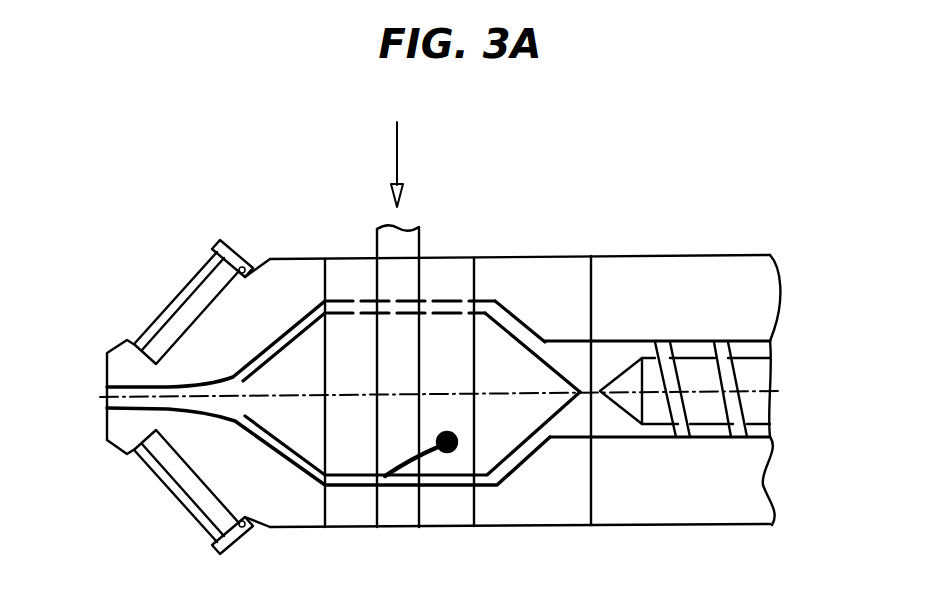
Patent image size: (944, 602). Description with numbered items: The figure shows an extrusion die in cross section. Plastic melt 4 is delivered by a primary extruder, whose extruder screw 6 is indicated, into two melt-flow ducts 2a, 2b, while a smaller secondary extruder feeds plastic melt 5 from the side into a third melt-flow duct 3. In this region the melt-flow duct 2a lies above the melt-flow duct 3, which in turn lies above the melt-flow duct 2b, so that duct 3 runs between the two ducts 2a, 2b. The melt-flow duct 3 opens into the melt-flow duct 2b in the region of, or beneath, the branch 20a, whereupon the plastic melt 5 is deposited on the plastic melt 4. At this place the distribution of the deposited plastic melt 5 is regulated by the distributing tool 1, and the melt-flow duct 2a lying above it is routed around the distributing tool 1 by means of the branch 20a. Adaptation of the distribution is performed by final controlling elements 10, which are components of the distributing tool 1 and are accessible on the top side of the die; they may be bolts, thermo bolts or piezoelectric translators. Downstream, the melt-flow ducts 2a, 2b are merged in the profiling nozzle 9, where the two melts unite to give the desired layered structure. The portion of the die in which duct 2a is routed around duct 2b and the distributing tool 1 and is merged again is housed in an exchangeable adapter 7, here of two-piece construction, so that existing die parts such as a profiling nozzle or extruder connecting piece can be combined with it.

The distributing tool 1 is at (395, 248).
The melt-flow duct 2a is at (507, 317).
The melt-flow duct 2b is at (540, 439).
The melt-flow duct 3 is at (417, 458).
The plastic melt 4 is at (610, 358).
The plastic melt 5 is at (448, 453).
The extruder screw 6 is at (753, 374).
The exchangeable adapter 7 is at (550, 465).
The profiling nozzle 9 is at (282, 292).
The final controlling element 10 is at (180, 310).
The branch 20a is at (426, 303).